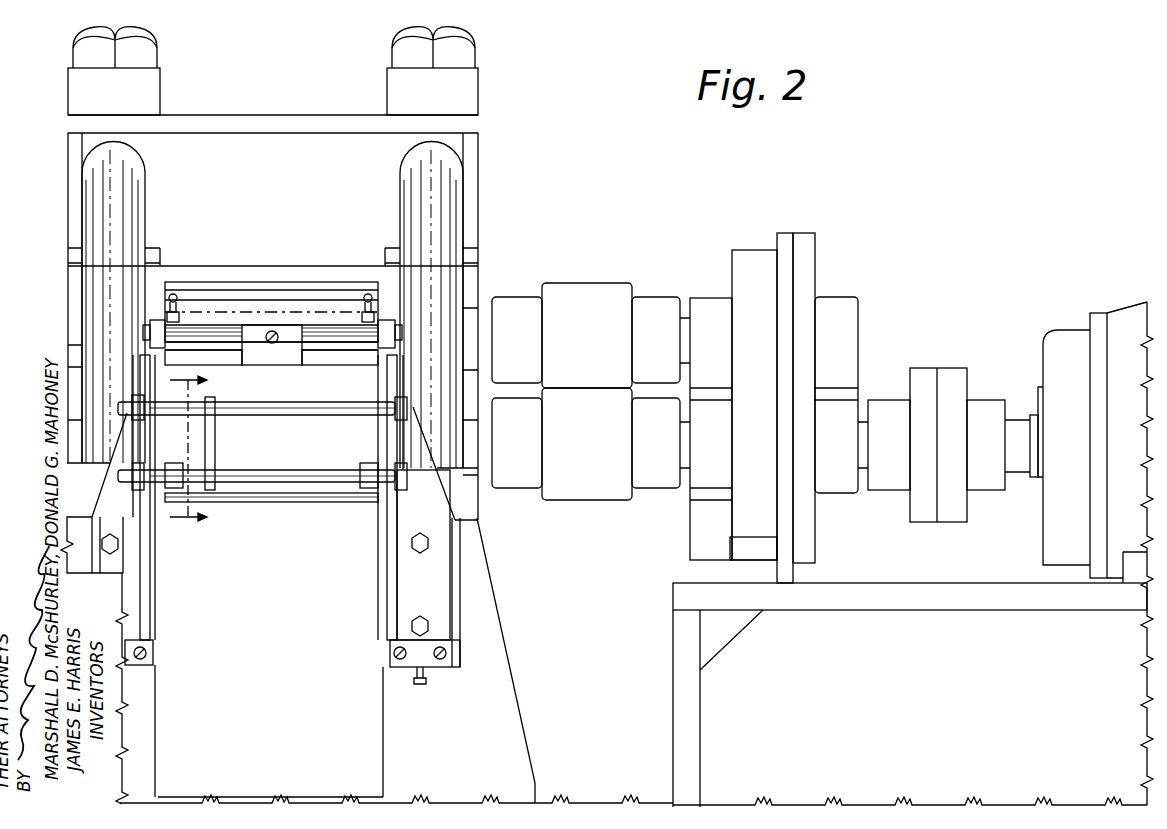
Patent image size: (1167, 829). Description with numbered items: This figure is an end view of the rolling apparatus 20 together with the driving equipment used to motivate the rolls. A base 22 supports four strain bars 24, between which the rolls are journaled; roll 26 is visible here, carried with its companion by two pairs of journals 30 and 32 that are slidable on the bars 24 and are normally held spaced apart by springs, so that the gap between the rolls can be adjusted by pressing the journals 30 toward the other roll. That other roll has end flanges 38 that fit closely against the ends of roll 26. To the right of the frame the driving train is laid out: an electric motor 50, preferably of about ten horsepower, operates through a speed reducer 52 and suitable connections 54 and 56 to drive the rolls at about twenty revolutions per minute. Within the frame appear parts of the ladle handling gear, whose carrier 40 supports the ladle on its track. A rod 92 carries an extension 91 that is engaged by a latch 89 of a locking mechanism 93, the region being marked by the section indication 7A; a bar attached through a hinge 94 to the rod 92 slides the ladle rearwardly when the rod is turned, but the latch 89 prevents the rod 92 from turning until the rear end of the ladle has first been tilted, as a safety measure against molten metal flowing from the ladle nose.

The rolling apparatus 20 is at (292, 104).
The base 22 is at (503, 648).
The strain bars 24 is at (143, 193).
The roll 26 is at (278, 282).
The journals 30 is at (68, 278).
The journals 32 is at (68, 388).
The end flanges 38 is at (160, 527).
The carrier 40 is at (447, 625).
The electric motor 50 is at (1071, 330).
The speed reducer 52 is at (815, 246).
The connection 54 is at (603, 500).
The connection 56 is at (601, 284).
The latch 89 is at (212, 402).
The extension 91 is at (220, 468).
The rod 92 is at (300, 478).
The locking mechanism 93 is at (212, 443).
The hinge 94 is at (173, 480).
The section line 7A is at (205, 457).